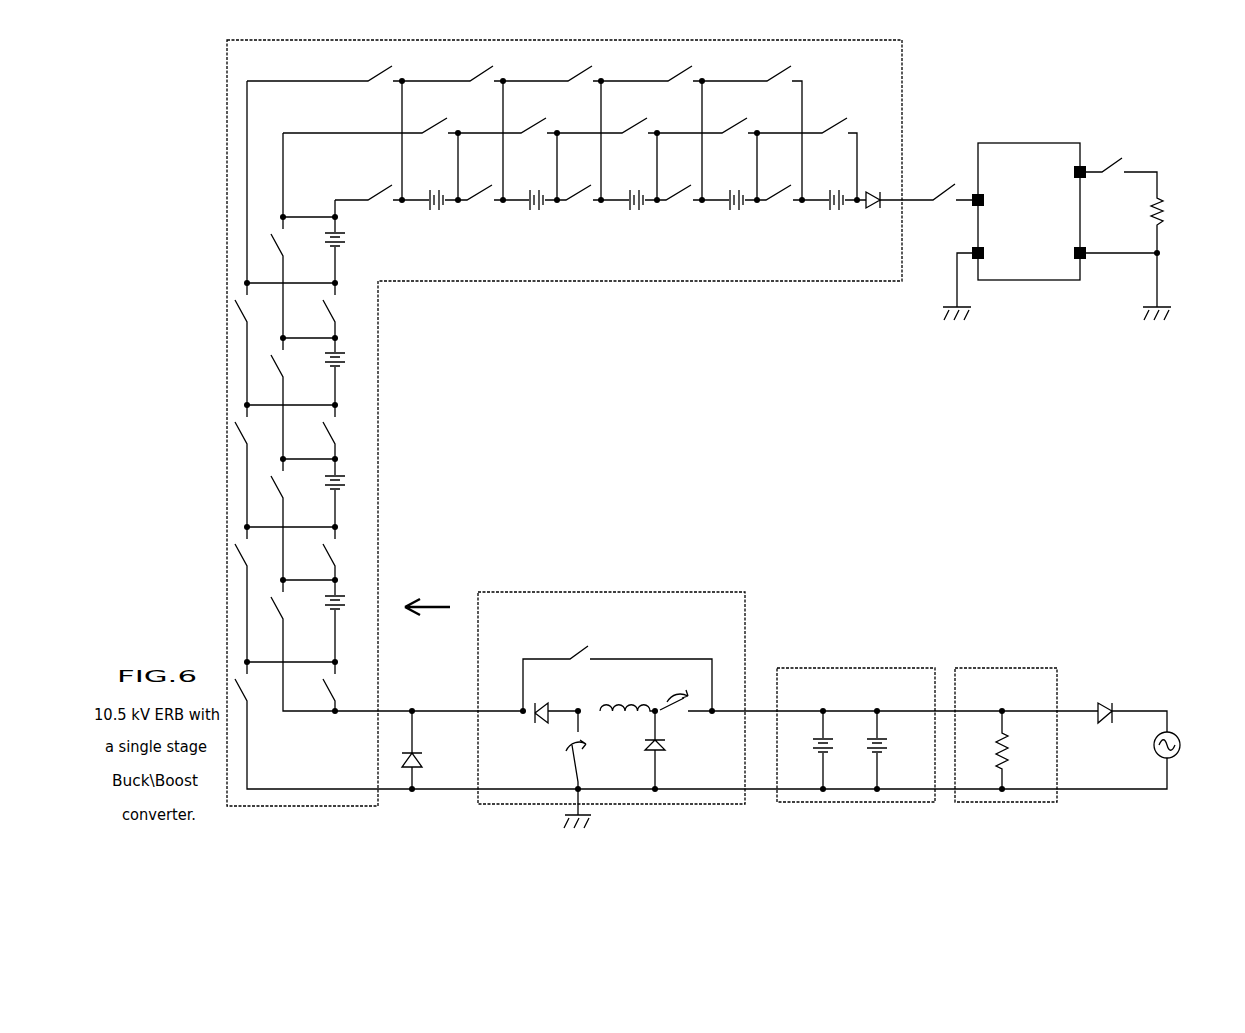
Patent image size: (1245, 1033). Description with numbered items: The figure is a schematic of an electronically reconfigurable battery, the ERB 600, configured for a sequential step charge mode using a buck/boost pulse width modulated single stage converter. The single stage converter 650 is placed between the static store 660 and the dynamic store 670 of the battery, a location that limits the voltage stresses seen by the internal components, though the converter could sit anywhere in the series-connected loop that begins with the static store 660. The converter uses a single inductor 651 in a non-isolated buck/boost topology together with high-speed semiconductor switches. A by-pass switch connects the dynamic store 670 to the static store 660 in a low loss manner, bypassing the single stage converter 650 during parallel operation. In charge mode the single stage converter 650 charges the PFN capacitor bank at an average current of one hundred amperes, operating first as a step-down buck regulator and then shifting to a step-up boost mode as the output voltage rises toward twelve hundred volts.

The electronically reconfigurable battery (ERB) 600 is at (731, 441).
The single stage converter (SSC) 650 is at (672, 804).
The inductor 651 is at (630, 704).
The static store 660 is at (866, 803).
The dynamic store 670 is at (528, 283).